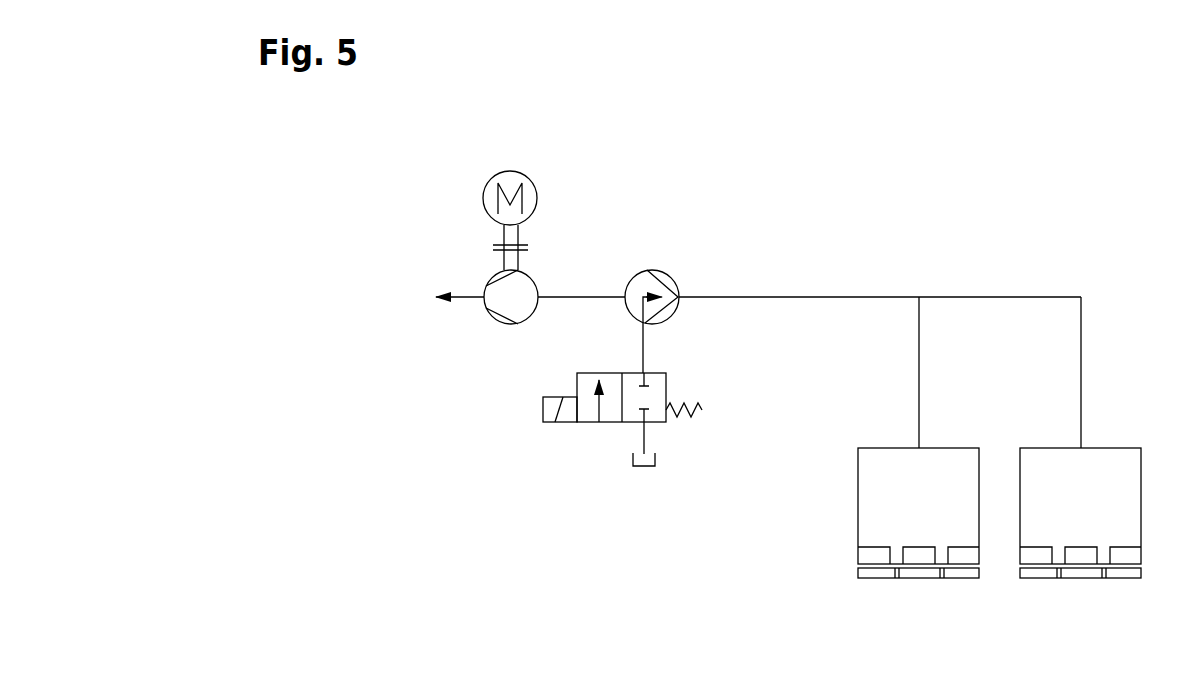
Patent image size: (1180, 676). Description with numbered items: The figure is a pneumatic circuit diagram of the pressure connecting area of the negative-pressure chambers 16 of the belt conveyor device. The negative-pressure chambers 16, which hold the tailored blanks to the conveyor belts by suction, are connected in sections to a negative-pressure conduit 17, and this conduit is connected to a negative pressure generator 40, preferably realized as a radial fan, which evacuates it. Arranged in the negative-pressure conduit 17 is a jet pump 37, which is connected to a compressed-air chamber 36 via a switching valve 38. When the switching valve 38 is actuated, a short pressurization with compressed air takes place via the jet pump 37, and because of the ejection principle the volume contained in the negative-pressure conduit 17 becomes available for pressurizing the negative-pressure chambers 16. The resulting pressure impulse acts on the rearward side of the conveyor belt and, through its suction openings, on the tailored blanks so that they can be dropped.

The negative-pressure chamber 16 is at (903, 518).
The negative-pressure conduit 17 is at (850, 282).
The compressed-air chamber 36 is at (644, 478).
The jet pump 37 is at (670, 272).
The switching valve 38 is at (618, 432).
The negative pressure generator 40 is at (532, 275).